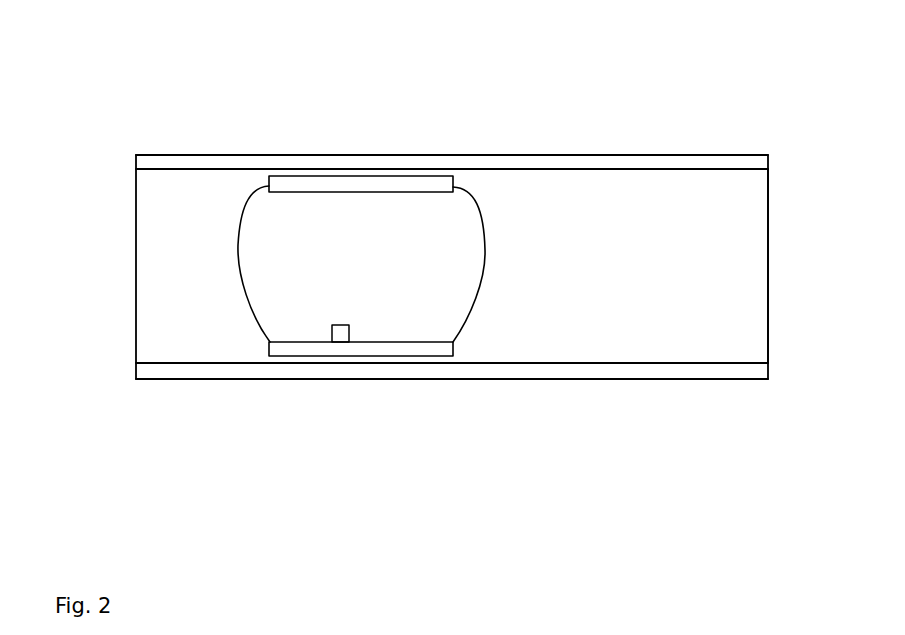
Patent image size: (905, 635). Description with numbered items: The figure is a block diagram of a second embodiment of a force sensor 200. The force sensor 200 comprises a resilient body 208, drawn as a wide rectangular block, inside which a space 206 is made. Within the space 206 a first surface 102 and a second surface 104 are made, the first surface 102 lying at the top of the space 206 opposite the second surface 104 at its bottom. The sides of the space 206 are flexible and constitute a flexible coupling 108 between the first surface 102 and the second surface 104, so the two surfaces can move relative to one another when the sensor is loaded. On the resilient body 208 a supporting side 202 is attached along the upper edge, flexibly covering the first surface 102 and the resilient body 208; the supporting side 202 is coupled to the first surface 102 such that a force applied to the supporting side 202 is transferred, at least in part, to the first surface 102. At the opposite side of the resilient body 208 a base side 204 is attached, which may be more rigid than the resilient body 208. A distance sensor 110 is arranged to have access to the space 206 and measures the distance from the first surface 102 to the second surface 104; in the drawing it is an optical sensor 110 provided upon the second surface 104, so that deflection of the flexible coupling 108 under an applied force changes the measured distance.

The force sensor 200 is at (802, 61).
The supporting side 202 is at (647, 160).
The base side 204 is at (602, 371).
The resilient body 208 is at (722, 288).
The first surface 102 is at (318, 184).
The second surface 104 is at (300, 350).
The flexible coupling 108 is at (242, 292).
The distance sensor 110 is at (340, 334).
The space 206 is at (420, 252).